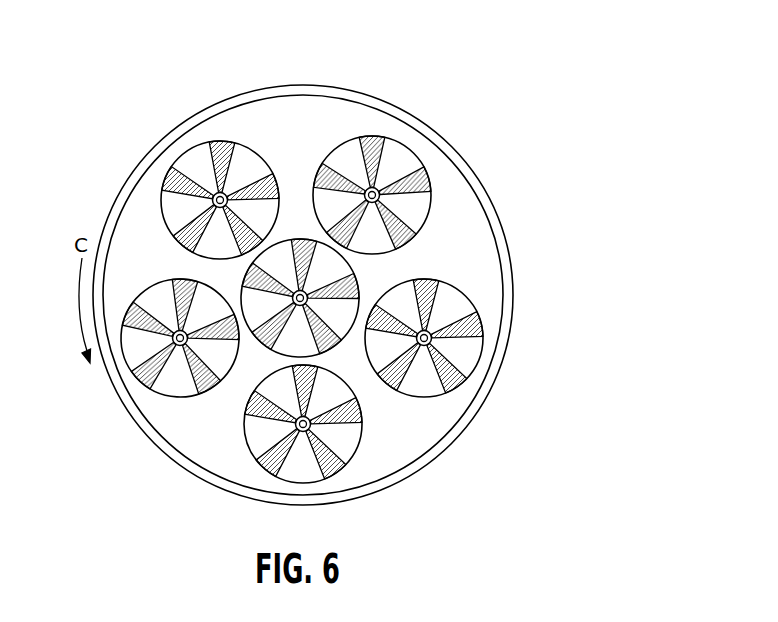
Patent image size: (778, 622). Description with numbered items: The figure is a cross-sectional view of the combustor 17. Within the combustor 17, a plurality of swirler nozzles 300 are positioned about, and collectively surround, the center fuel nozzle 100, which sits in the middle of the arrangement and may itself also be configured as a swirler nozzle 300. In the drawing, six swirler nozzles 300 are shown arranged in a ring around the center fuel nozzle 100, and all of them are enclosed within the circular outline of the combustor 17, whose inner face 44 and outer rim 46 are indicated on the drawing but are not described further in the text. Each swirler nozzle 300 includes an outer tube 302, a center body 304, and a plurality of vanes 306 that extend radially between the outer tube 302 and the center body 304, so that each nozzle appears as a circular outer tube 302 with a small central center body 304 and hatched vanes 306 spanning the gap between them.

The combustor 17 is at (590, 84).
The end face of the rotor body 44 is at (457, 215).
The outer rim of the rotor body 46 is at (513, 283).
The center fuel nozzle 100 is at (327, 295).
The swirler nozzle 300 is at (328, 265).
The outer tube 302 is at (423, 224).
The center body 304 is at (166, 190).
The vane 306 is at (380, 148).